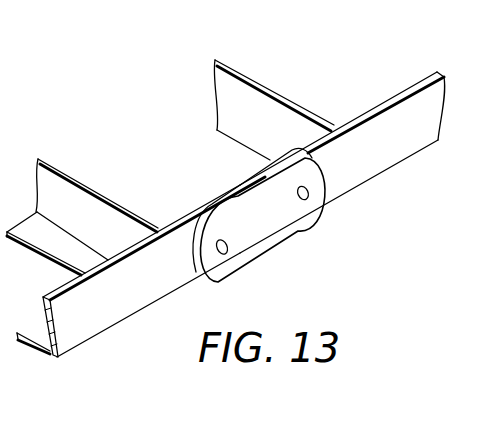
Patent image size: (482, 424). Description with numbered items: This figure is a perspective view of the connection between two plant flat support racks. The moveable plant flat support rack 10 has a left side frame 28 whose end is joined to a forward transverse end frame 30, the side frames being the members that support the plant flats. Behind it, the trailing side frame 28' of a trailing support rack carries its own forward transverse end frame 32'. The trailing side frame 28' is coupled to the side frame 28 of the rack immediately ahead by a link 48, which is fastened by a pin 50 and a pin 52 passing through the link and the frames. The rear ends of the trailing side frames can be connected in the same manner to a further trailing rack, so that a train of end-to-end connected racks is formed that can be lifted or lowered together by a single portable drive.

The moveable plant flat support rack 10 is at (361, 98).
The left side frame 28 is at (342, 162).
The trailing side frame 28' is at (154, 267).
The forward transverse end frame 30 is at (226, 106).
The forward transverse end frame 32' is at (82, 251).
The link 48 is at (270, 226).
The pin 50 is at (228, 257).
The pin 52 is at (308, 203).